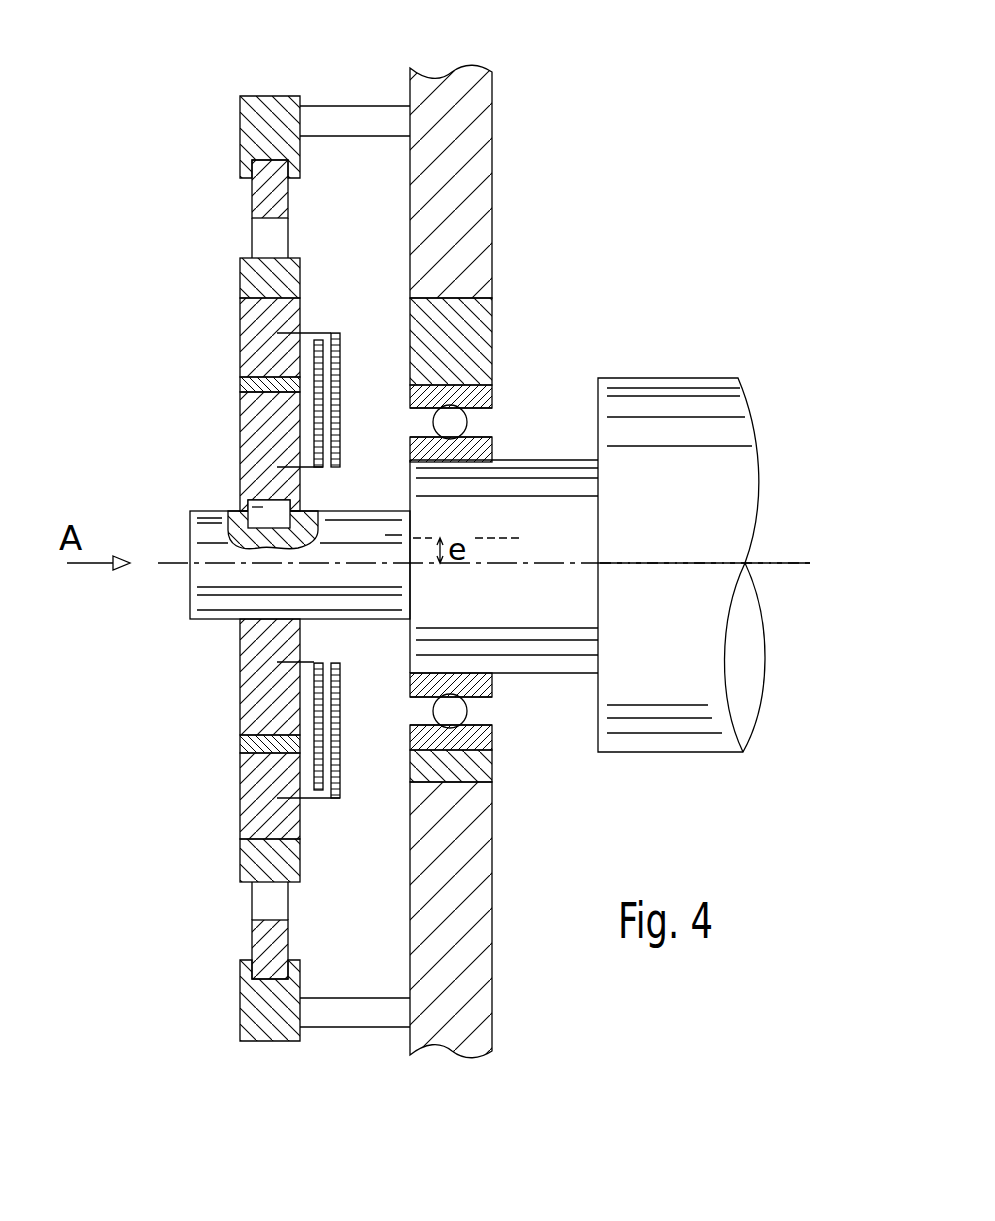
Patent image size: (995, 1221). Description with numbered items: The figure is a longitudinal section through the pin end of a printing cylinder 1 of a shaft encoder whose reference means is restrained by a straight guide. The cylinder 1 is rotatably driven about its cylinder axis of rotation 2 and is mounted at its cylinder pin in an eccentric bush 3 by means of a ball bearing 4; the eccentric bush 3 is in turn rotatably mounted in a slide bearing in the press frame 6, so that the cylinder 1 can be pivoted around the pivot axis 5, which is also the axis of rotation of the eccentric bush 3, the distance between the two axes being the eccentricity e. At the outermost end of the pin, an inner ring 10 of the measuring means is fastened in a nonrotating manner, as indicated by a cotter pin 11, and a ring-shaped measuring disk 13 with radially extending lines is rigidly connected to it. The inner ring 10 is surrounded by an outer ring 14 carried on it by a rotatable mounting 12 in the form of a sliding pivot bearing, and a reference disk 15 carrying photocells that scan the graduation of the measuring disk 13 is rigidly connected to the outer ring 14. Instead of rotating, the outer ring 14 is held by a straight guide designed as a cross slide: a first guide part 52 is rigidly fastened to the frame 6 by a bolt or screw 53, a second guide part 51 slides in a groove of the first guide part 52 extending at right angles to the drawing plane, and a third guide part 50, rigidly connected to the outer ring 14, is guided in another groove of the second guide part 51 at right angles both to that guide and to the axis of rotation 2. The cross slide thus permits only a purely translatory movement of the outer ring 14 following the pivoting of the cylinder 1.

The printing cylinder 1 is at (686, 378).
The cylinder axis of rotation 2 is at (645, 562).
The eccentric bush 3 is at (490, 332).
The ball bearing 4 is at (482, 408).
The pivot axis 5 is at (514, 540).
The press frame 6 is at (465, 92).
The inner ring 10 is at (254, 423).
The cotter pin 11 is at (244, 511).
The rotatable mounting 12 is at (254, 746).
The measuring disk 13 is at (316, 340).
The outer ring 14 is at (248, 345).
The reference disk 15 is at (341, 358).
The third guide part 50 is at (248, 278).
The second guide part 51 is at (260, 190).
The first guide part 52 is at (246, 105).
The bolt or screw 53 is at (330, 116).